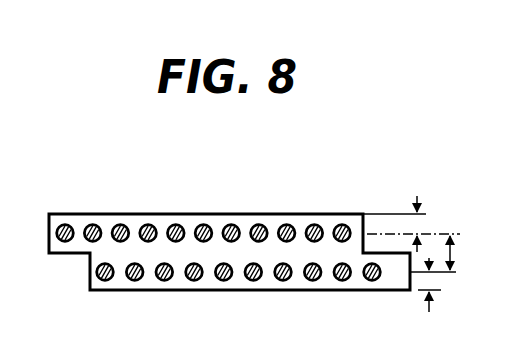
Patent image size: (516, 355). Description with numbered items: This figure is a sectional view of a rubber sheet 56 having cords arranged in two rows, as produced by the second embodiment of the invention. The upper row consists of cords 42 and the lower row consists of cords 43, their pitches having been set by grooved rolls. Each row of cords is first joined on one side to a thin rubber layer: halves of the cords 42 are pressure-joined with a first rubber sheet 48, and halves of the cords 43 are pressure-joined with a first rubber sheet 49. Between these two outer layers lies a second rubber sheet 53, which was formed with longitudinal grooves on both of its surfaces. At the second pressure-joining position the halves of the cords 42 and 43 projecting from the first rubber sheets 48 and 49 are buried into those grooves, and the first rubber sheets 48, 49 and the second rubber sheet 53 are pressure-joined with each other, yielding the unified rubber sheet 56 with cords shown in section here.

The cords 42 is at (229, 225).
The cords 43 is at (252, 280).
The first rubber sheet 48 is at (411, 210).
The first rubber sheet 49 is at (422, 298).
The second rubber sheet 53 is at (449, 255).
The rubber sheet having cords 56 is at (258, 213).